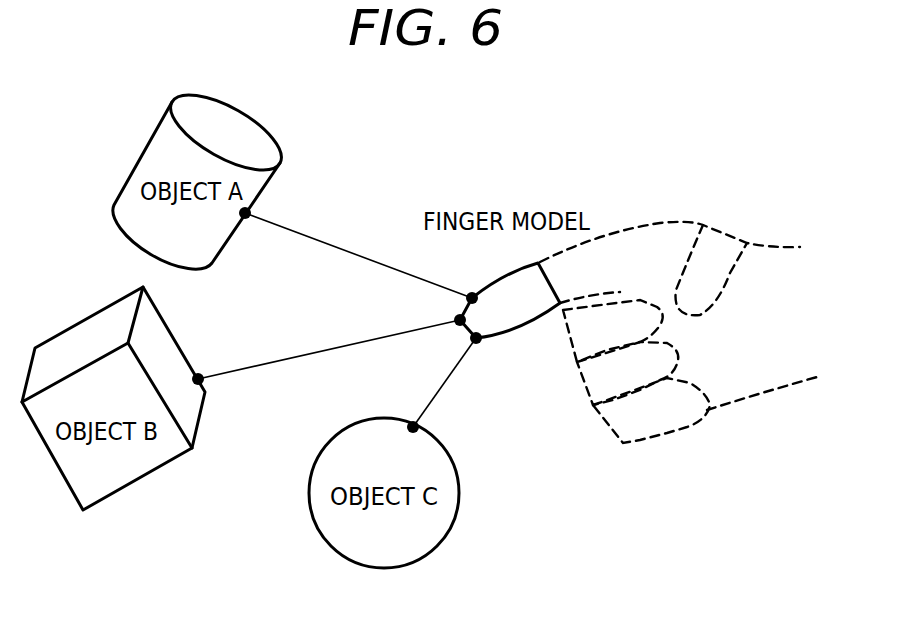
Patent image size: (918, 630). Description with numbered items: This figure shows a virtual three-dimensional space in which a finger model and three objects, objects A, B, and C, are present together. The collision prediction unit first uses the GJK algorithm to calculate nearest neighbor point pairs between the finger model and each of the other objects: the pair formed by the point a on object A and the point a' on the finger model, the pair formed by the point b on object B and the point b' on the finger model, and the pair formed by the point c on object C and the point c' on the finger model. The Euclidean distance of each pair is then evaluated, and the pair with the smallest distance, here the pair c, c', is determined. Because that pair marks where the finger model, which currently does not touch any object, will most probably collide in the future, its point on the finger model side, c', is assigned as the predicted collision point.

The nearest neighbor point on object A a is at (259, 209).
The nearest neighbor point on object B b is at (203, 362).
The nearest neighbor point on object C c is at (426, 424).
The nearest neighbor point on finger model for object A a' is at (472, 282).
The nearest neighbor point on finger model for object B b' is at (447, 311).
The nearest neighbor point on finger model for object C c' is at (481, 352).